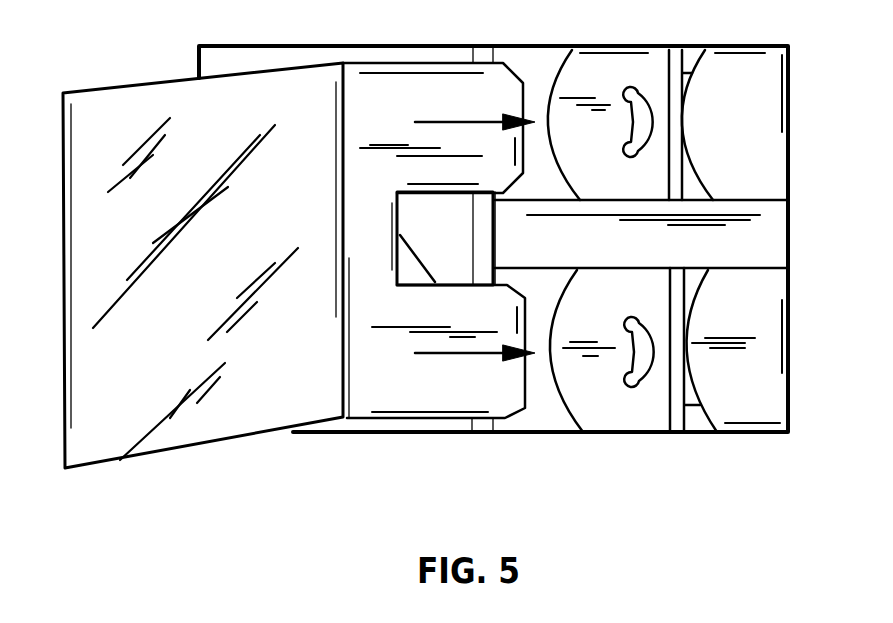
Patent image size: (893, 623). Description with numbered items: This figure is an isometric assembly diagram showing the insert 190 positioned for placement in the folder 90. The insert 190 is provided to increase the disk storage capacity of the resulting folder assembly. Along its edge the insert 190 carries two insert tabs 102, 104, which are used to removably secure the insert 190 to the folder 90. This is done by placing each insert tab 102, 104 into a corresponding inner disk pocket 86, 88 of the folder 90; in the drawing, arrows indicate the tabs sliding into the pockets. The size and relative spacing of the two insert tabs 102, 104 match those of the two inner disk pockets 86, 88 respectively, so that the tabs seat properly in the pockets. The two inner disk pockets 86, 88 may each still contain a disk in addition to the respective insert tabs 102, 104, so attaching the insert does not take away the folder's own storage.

The folder 90 is at (250, 47).
The insert 190 is at (150, 82).
The insert tab 102 is at (415, 80).
The insert tab 104 is at (400, 403).
The disk pocket 86 is at (560, 73).
The disk pocket 88 is at (572, 405).